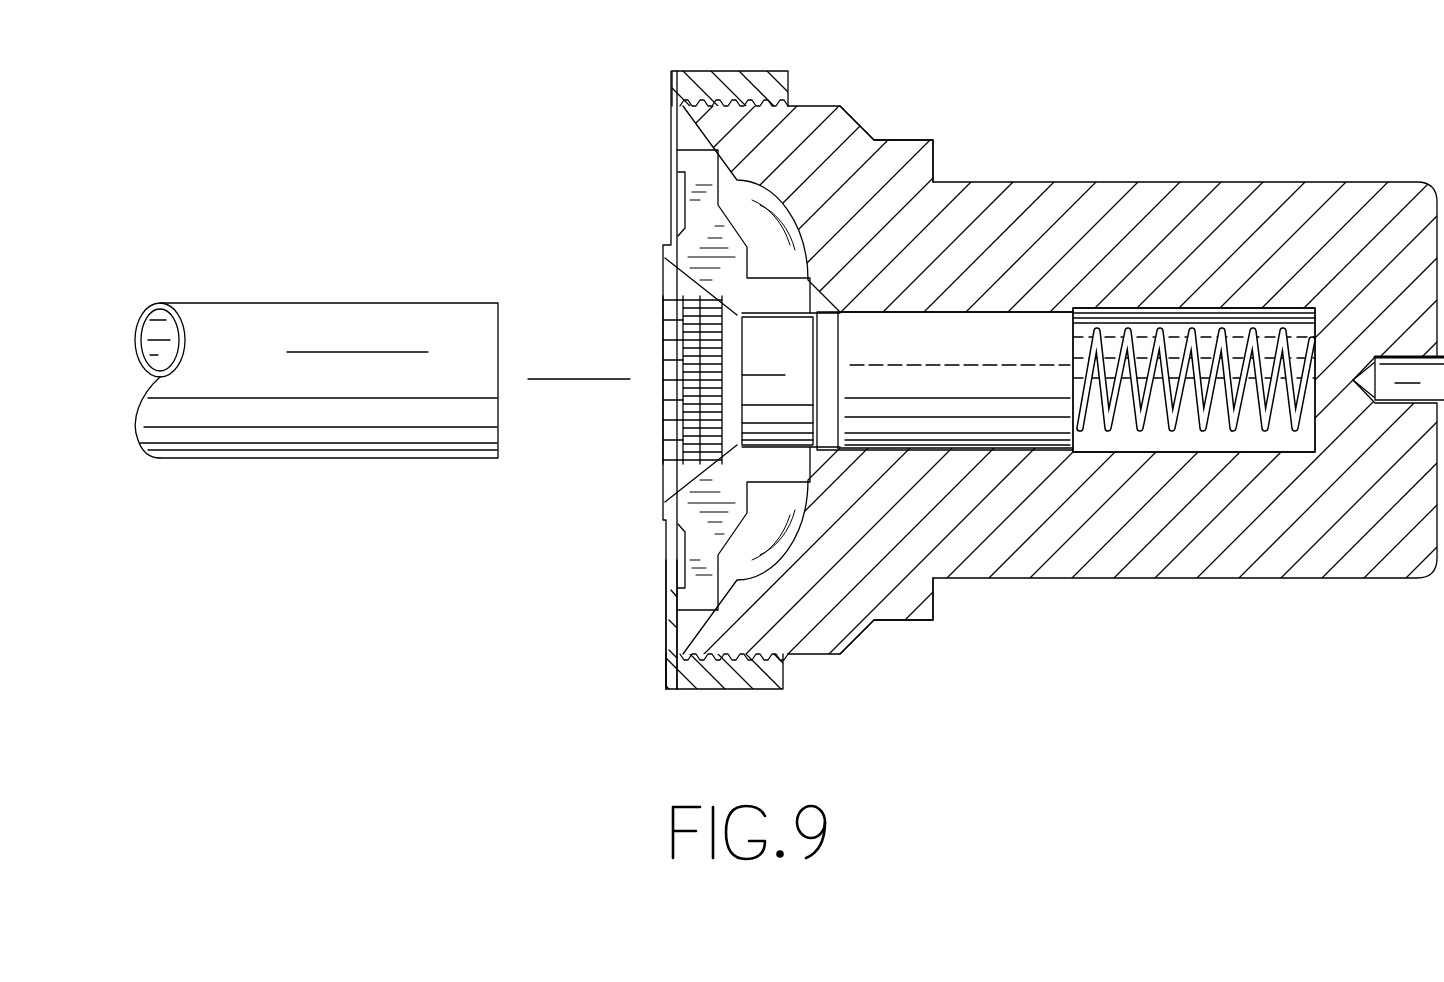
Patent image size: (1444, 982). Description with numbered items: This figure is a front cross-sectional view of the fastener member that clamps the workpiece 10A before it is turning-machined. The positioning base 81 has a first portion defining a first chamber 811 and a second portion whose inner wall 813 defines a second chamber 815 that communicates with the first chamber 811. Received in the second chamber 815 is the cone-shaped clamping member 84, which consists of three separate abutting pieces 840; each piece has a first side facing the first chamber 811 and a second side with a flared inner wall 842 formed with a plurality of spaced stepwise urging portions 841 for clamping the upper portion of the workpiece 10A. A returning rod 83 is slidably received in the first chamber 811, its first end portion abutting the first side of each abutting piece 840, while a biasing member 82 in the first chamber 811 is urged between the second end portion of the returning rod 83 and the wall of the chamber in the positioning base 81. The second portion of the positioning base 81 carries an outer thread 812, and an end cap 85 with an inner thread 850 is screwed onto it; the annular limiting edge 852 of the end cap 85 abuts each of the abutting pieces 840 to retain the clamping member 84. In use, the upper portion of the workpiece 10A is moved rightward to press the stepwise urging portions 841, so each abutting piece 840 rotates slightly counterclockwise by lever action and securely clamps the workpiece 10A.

The workpiece 10A is at (300, 325).
The positioning base 81 is at (1107, 563).
The first chamber 811 is at (1163, 437).
The outer thread 812 is at (758, 69).
The inner wall 813 is at (697, 157).
The second chamber 815 is at (875, 140).
The biasing member 82 is at (1240, 417).
The returning rod 83 is at (1035, 328).
The clamping member 84 is at (666, 513).
The abutting pieces 840 is at (678, 262).
The stepwise urging portions 841 is at (663, 450).
The flared inner wall 842 is at (668, 305).
The end cap 85 is at (700, 676).
The inner thread 850 is at (797, 652).
The annular limiting edge 852 is at (668, 628).